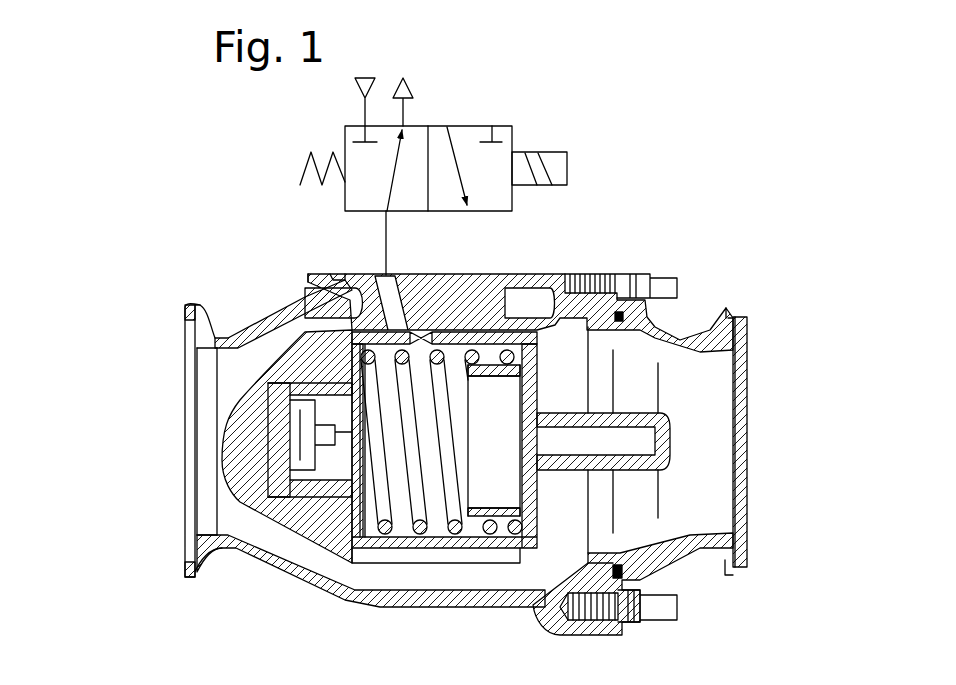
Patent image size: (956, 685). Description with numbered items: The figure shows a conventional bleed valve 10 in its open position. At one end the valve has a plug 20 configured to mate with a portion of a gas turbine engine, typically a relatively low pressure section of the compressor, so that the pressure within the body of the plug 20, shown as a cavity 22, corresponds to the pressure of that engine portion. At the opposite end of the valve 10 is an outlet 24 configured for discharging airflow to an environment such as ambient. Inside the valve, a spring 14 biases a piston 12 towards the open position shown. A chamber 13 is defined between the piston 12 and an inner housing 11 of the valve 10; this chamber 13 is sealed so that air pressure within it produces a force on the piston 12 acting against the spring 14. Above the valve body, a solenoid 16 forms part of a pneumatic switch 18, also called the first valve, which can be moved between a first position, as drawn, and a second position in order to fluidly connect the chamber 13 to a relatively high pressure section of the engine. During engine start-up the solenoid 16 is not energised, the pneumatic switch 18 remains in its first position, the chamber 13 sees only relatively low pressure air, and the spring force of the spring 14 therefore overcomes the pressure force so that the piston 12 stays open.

The bleed valve 10 is at (190, 250).
The inner housing 11 is at (318, 512).
The piston 12 is at (400, 550).
The chamber 13 is at (352, 330).
The spring 14 is at (425, 536).
The solenoid 16 is at (548, 152).
The pneumatic switch 18 is at (490, 98).
The plug 20 is at (185, 505).
The cavity 22 is at (211, 386).
The outlet 24 is at (732, 307).